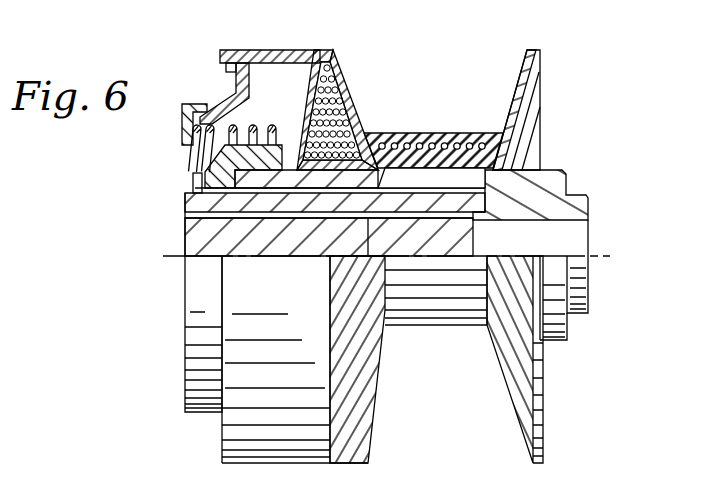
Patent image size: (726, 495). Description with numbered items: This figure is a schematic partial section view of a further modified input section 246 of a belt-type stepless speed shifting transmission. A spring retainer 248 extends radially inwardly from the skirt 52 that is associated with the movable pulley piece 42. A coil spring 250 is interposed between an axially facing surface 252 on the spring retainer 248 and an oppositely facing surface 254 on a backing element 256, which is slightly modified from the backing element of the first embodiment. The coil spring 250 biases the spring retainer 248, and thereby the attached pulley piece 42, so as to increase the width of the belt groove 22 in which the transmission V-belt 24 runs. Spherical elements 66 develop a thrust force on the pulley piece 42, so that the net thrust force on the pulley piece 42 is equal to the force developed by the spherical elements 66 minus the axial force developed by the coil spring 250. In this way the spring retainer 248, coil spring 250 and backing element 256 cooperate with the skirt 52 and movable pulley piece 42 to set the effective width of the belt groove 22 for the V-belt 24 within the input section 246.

The V-shaped groove 22 is at (427, 51).
The transmission V-belt 24 is at (423, 133).
The movable pulley piece 42 is at (338, 78).
The skirt 52 is at (264, 50).
The spherical elements 66 is at (322, 117).
The input section 246 is at (614, 287).
The spring retainer 248 is at (232, 100).
The coil spring 250 is at (256, 124).
The axially facing surface 252 is at (184, 106).
The oppositely facing surface 254 is at (275, 124).
The backing element 256 is at (235, 153).